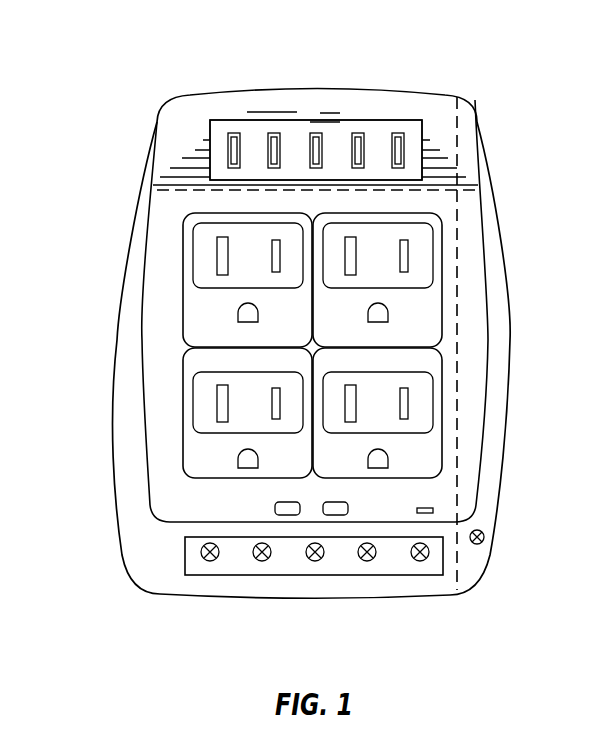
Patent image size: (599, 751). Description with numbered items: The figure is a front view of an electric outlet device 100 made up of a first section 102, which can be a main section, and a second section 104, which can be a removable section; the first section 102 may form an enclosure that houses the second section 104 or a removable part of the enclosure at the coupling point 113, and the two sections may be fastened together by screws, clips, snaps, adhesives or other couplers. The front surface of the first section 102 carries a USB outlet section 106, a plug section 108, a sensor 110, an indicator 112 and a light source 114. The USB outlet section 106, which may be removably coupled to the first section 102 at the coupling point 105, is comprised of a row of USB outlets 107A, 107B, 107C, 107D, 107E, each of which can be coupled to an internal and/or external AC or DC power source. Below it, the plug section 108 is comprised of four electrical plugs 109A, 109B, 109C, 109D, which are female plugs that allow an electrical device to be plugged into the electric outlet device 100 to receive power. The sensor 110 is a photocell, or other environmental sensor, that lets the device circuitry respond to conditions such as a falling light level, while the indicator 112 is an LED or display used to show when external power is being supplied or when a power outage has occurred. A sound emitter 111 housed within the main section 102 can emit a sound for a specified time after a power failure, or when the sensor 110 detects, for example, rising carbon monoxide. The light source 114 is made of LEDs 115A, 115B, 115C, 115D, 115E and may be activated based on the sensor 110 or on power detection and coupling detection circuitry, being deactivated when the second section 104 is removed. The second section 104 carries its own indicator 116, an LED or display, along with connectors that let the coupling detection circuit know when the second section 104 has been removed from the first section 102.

The electric outlet device 100 is at (120, 58).
The first section 102 is at (153, 343).
The second section 104 is at (468, 212).
The coupling point 105 is at (444, 176).
The USB outlet section 106 is at (322, 120).
The USB outlet 107A is at (233, 133).
The USB outlet 107B is at (275, 133).
The USB outlet 107C is at (316, 133).
The USB outlet 107D is at (357, 133).
The USB outlet 107E is at (398, 133).
The plug section 108 is at (466, 345).
The electrical plug 109A is at (440, 287).
The electrical plug 109B is at (182, 283).
The electrical plug 109C is at (183, 428).
The electrical plug 109D is at (440, 430).
The sensor 110 is at (343, 500).
The sound emitter 111 is at (425, 507).
The indicator 112 is at (290, 500).
The coupling point 113 is at (466, 129).
The light source 114 is at (337, 603).
The LED 115A is at (200, 555).
The LED 115B is at (259, 562).
The LED 115C is at (313, 562).
The LED 115D is at (368, 562).
The LED 115E is at (421, 562).
The indicator 116 is at (485, 540).